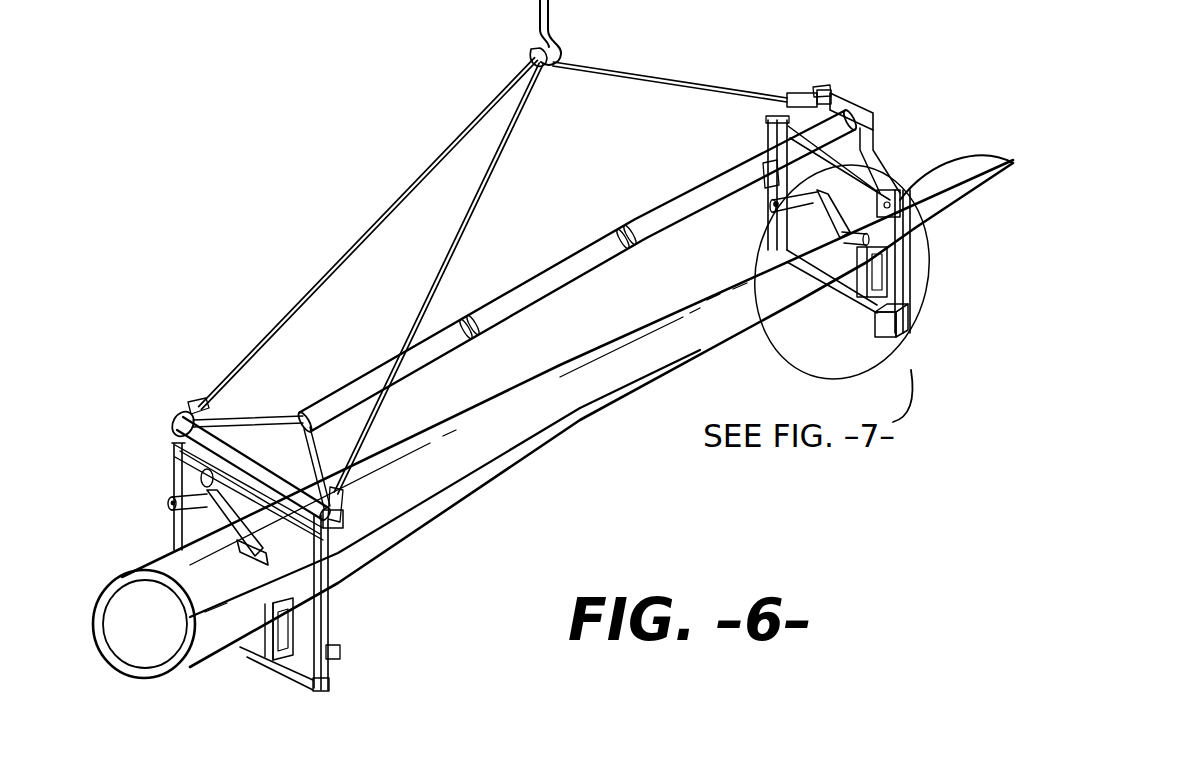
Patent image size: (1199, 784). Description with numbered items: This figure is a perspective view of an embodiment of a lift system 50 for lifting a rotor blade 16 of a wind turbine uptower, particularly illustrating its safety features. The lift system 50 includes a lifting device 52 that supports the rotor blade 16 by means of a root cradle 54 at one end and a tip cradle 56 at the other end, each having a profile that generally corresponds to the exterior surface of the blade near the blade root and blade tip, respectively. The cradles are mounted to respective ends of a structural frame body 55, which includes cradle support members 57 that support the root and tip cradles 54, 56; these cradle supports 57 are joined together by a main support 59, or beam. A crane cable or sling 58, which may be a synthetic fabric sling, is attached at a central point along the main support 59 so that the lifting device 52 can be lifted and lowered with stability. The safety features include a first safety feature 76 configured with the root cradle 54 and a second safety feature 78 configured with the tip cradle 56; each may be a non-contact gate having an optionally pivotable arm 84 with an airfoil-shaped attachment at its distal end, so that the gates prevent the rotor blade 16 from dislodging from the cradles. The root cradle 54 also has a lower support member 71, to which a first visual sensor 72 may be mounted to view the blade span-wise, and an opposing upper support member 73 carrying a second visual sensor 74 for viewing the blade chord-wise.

The rotor blade 16 is at (587, 455).
The lift system 50 is at (163, 366).
The lifting device 52 is at (830, 199).
The root cradle 54 is at (547, 464).
The structural frame body 55 is at (577, 270).
The tip cradle 56 is at (835, 296).
The cradle support member 57 is at (330, 588).
The crane cable or sling 58 is at (383, 210).
The main support 59 is at (535, 277).
The lower support member 71 is at (253, 646).
The first visual sensor 72 is at (348, 670).
The upper support member 73 is at (175, 421).
The second visual sensor 74 is at (343, 528).
The first safety feature 76 is at (187, 479).
The second safety feature 78 is at (856, 213).
The pivotable arm 84 is at (775, 205).